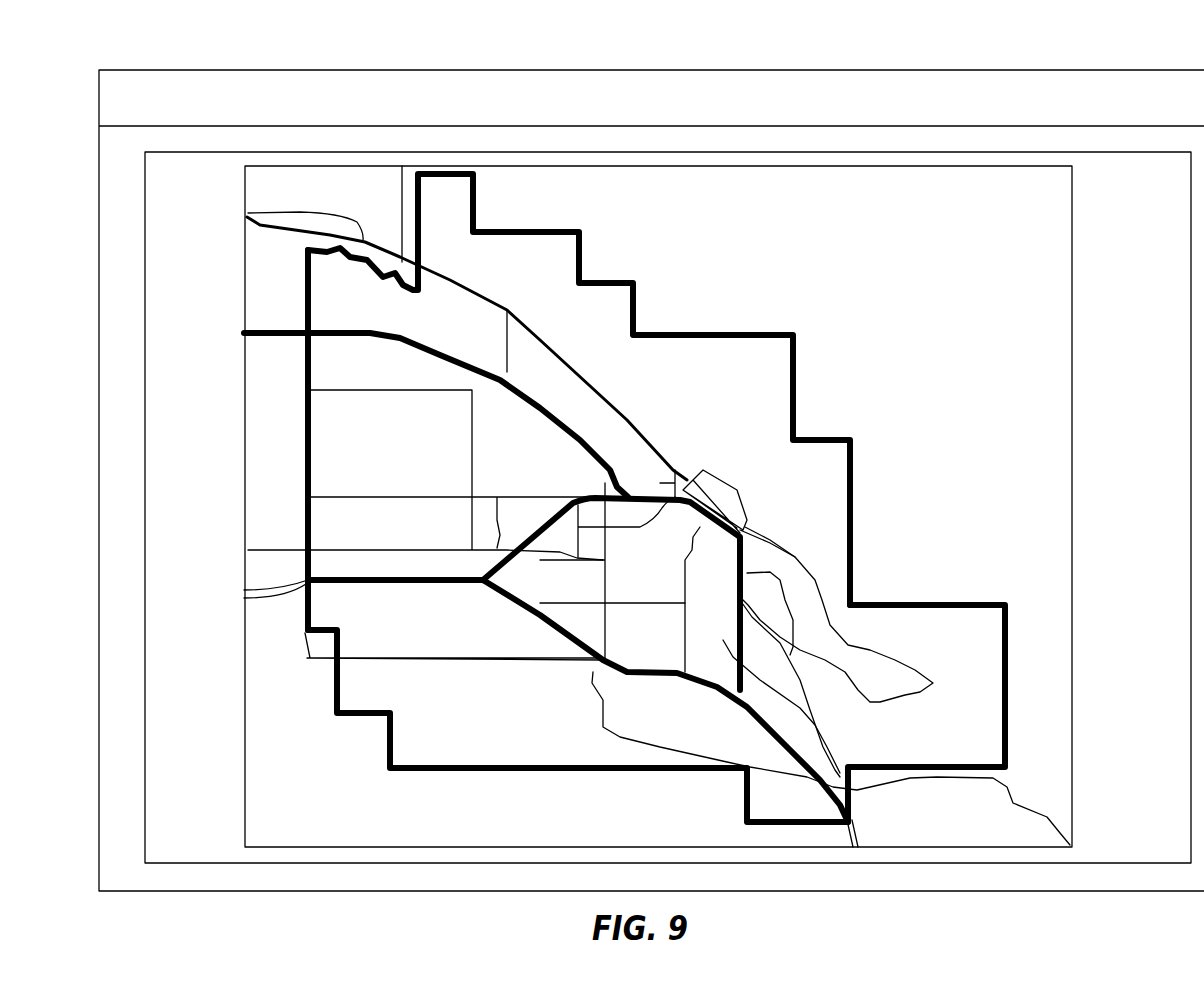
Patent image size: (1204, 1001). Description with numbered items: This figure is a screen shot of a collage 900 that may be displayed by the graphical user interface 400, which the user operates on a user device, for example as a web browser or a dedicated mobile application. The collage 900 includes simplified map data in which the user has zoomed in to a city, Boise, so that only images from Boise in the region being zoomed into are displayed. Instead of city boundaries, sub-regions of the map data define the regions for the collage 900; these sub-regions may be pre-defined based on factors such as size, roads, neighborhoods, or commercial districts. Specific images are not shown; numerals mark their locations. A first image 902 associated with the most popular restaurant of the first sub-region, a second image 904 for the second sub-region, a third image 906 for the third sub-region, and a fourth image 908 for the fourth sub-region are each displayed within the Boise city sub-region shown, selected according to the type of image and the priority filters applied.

The graphical user interface 400 is at (973, 70).
The collage 900 is at (1075, 231).
The first image 902 is at (611, 586).
The second image 904 is at (655, 701).
The third image 906 is at (436, 440).
The fourth image 908 is at (579, 389).